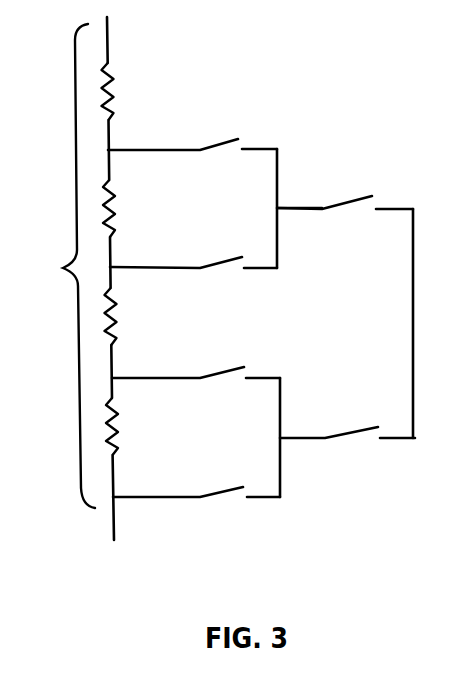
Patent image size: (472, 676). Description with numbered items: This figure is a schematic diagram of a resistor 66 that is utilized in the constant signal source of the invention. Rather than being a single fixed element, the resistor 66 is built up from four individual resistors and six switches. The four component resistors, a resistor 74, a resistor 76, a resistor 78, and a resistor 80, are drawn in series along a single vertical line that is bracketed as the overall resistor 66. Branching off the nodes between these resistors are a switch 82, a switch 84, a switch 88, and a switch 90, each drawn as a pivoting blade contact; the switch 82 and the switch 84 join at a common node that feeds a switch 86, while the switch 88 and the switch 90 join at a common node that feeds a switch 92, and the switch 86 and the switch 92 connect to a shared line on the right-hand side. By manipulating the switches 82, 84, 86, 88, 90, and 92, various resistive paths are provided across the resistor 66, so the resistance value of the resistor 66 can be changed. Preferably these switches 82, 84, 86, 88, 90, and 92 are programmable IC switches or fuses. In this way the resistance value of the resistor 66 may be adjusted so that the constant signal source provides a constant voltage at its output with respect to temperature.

The resistor 66 is at (63, 268).
The resistor 74 is at (111, 82).
The resistor 76 is at (113, 215).
The resistor 78 is at (114, 323).
The resistor 80 is at (116, 433).
The switch 82 is at (216, 147).
The switch 84 is at (216, 265).
The switch 86 is at (352, 206).
The switch 88 is at (220, 374).
The switch 90 is at (220, 493).
The switch 92 is at (355, 433).